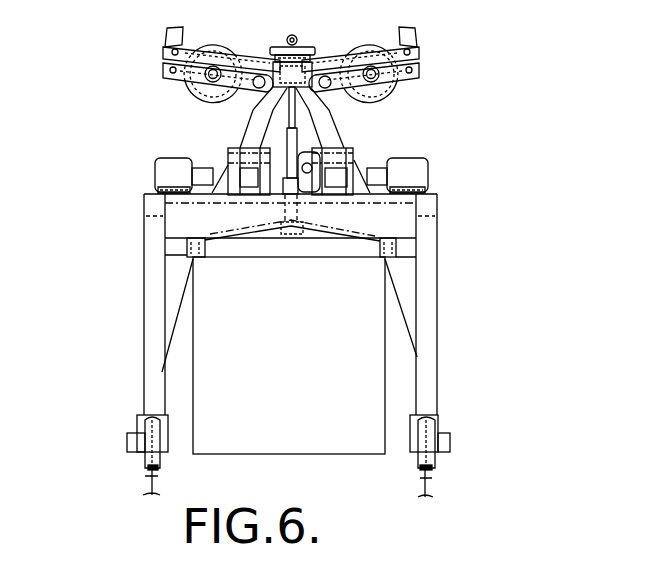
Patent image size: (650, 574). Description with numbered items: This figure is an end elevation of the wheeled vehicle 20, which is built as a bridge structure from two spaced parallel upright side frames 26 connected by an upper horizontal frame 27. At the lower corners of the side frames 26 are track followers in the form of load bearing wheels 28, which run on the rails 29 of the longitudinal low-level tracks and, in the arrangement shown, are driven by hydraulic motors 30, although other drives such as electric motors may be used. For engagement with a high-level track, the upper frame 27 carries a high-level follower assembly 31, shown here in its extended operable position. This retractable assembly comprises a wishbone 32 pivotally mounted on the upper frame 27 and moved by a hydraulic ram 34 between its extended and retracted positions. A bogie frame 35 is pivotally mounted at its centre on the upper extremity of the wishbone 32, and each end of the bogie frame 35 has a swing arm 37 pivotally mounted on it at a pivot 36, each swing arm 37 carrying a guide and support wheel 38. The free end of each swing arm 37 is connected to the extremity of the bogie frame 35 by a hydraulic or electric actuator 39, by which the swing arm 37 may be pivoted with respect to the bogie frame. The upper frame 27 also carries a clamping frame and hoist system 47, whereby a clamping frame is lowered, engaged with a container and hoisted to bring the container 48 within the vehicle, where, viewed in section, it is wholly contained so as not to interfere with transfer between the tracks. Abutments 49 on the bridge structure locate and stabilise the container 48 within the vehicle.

The wheeled vehicle 20 is at (448, 197).
The upright side frames 26 is at (160, 322).
The upper horizontal frame 27 is at (397, 227).
The load bearing wheels 28 is at (157, 457).
The rails 29 is at (152, 487).
The hydraulic motors 30 is at (133, 440).
The high-level follower assembly 31 is at (434, 61).
The wishbone 32 is at (247, 128).
The hydraulic ram 34 is at (293, 143).
The bogie frame 35 is at (318, 64).
The pivot 36 is at (330, 88).
The swing arm 37 is at (405, 75).
The guide and support wheel 38 is at (204, 91).
The hydraulic or electric actuator 39 is at (417, 37).
The clamping frame and hoist system 47 is at (350, 167).
The container 48 is at (387, 385).
The abutments 49 is at (193, 258).